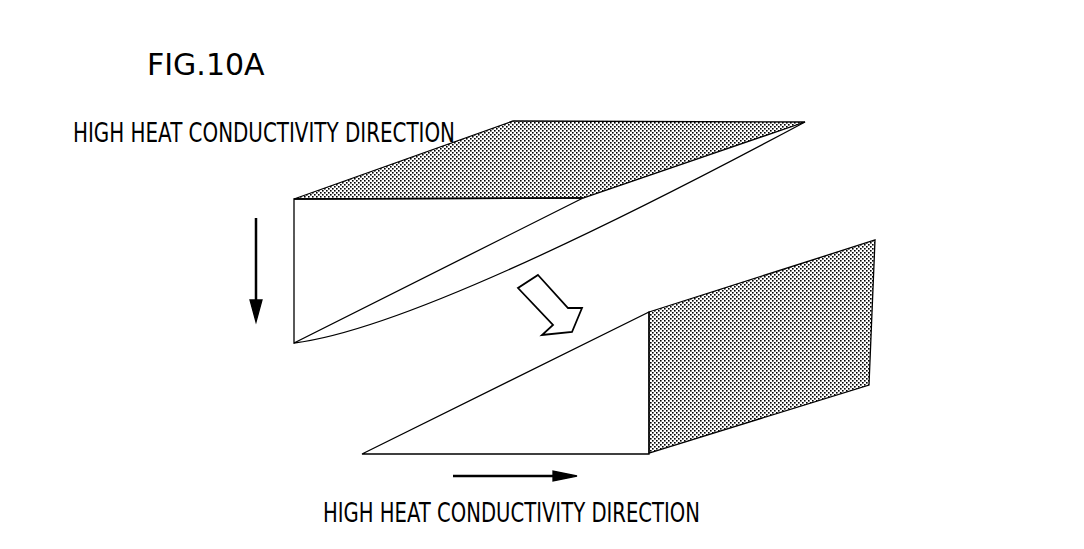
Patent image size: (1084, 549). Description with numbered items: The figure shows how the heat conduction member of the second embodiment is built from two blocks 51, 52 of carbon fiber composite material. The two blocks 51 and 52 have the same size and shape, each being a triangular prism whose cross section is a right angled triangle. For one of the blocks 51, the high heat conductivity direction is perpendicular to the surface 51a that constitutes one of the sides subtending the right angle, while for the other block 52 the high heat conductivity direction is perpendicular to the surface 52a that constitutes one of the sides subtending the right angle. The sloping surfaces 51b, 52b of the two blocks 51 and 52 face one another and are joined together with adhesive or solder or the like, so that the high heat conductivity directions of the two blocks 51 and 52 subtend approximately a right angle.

The block 51 is at (549, 203).
The surface 51a is at (595, 142).
The sloping surface 51b is at (645, 190).
The block 52 is at (645, 327).
The surface 52a is at (848, 305).
The sloping surface 52b is at (633, 337).